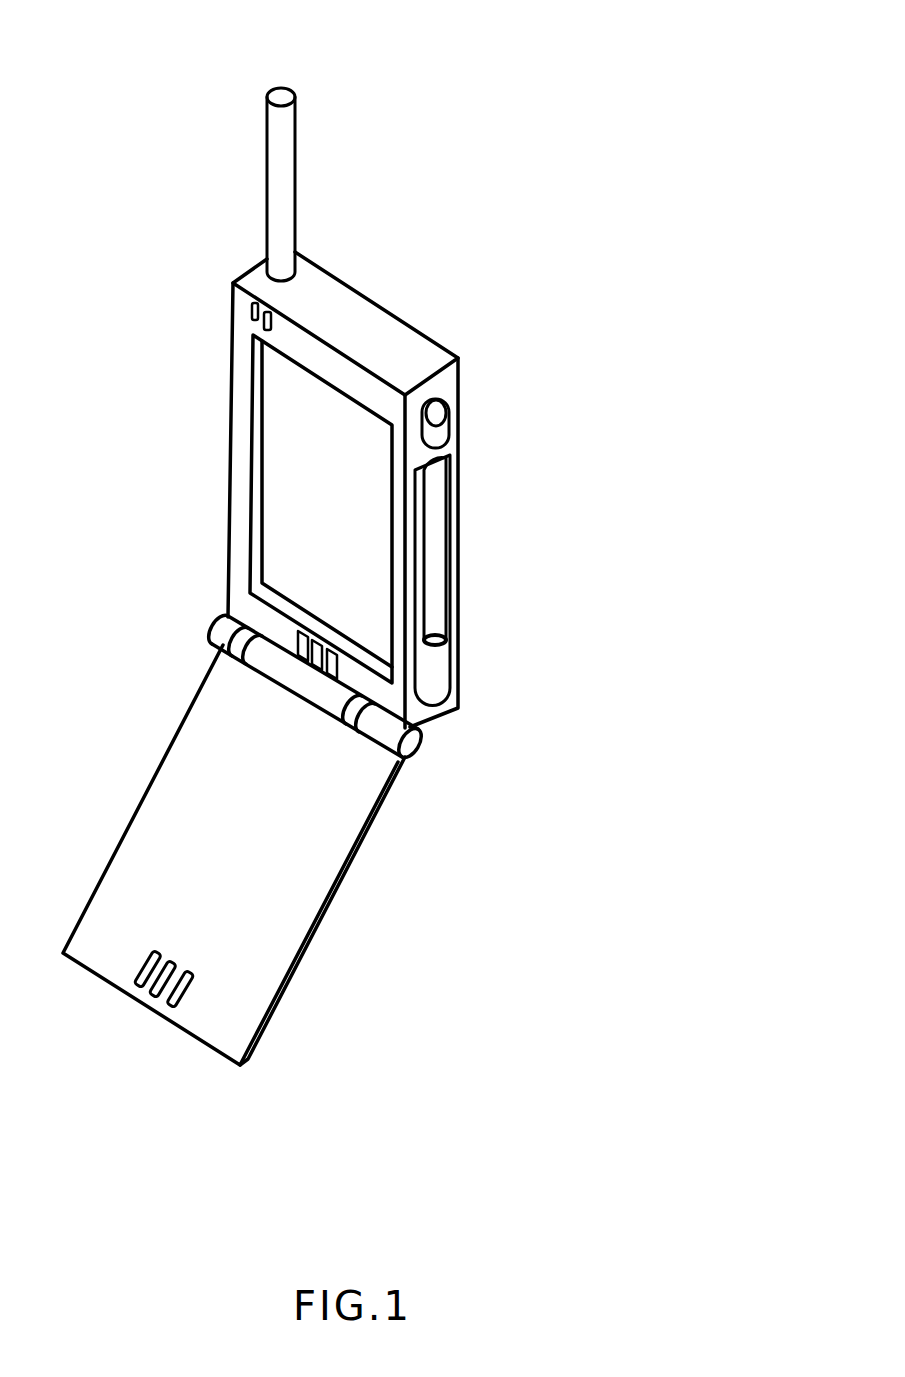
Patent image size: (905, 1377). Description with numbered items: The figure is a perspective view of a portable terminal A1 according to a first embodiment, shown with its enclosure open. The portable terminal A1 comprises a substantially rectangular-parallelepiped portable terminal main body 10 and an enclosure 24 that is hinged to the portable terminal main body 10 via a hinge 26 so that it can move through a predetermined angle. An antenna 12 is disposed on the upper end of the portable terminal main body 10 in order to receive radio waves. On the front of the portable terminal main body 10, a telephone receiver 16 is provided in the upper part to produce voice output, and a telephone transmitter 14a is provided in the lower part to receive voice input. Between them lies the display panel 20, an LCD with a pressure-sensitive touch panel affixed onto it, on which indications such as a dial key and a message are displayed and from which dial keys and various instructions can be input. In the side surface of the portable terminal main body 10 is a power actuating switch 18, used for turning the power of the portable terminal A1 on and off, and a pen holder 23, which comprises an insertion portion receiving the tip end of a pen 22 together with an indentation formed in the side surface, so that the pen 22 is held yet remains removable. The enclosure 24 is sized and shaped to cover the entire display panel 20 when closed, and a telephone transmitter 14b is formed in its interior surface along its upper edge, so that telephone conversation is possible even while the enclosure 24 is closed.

The portable terminal A1 is at (430, 76).
The portable terminal main body 10 is at (390, 314).
The antenna 12 is at (293, 130).
The telephone transmitter 14a is at (295, 650).
The telephone transmitter 14b is at (140, 1000).
The telephone receiver 16 is at (235, 297).
The power actuating switch 18 is at (445, 418).
The display panel 20 is at (360, 605).
The pen 22 is at (437, 540).
The pen holder 23 is at (437, 680).
The enclosure 24 is at (240, 916).
The hinge 26 is at (415, 752).